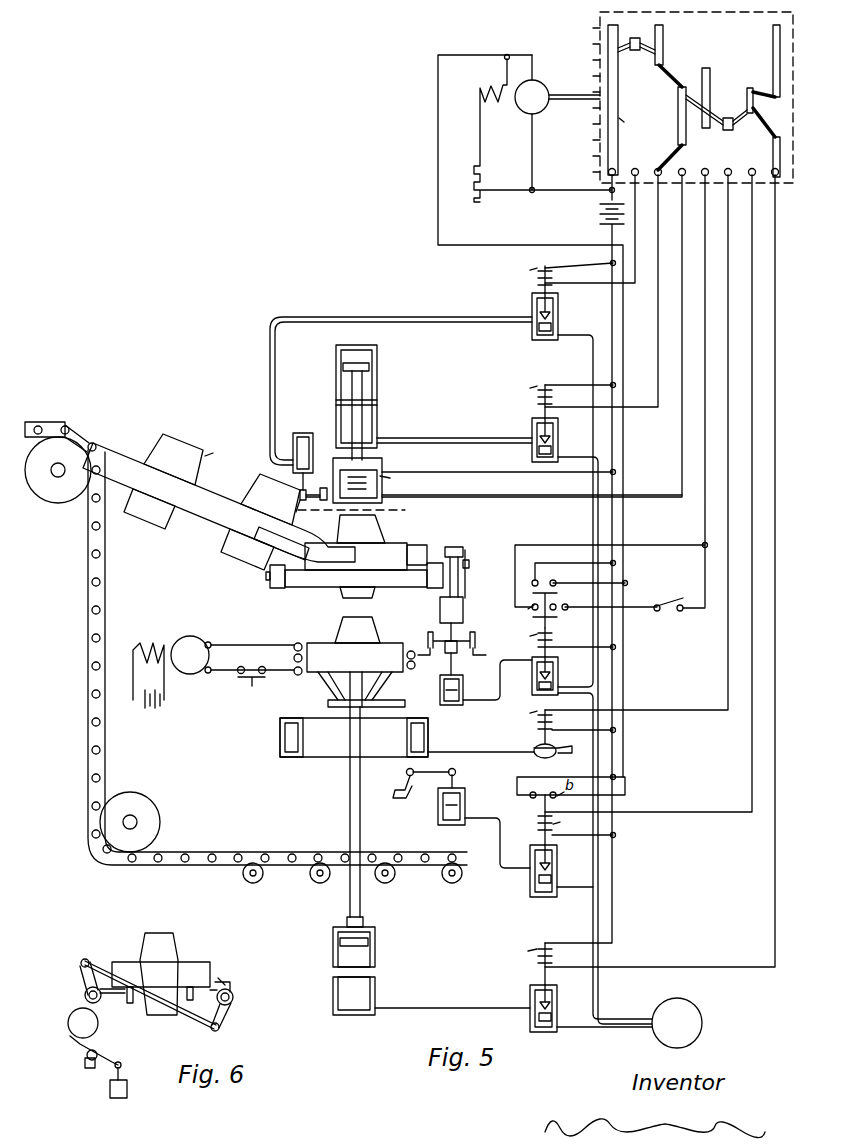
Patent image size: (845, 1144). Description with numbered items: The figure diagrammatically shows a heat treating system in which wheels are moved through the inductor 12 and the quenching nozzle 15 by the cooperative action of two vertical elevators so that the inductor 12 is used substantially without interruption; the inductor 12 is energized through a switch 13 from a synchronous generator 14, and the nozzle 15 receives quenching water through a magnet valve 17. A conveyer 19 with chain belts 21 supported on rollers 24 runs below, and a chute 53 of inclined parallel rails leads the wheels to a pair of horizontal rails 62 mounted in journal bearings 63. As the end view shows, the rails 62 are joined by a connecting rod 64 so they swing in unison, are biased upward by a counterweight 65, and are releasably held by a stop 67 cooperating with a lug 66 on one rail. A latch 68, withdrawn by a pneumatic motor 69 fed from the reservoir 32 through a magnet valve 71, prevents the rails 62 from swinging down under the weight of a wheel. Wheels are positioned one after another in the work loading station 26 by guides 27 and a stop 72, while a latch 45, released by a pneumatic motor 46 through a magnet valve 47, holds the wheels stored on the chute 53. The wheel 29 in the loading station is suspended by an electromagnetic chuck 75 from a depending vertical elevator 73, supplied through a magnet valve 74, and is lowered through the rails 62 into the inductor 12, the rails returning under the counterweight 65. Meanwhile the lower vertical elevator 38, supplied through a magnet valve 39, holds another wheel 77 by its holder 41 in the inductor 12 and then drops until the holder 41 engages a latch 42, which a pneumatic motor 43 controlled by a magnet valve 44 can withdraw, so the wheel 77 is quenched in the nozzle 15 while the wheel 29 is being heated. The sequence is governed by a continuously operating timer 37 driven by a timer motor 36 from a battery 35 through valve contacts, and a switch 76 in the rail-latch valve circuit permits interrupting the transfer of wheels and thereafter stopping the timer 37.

In FIG. 5, the inductor 12 is at (298, 675).
In FIG. 5, the switch 13 is at (248, 678).
In FIG. 5, the synchronous generator 14 is at (190, 674).
In FIG. 5, the quenching nozzle 15 is at (280, 738).
In FIG. 5, the magnet valve 17 is at (533, 748).
In FIG. 5, the conveyer 19 is at (192, 828).
In FIG. 5, the chain belts 21 is at (225, 866).
In FIG. 5, the rollers 24 is at (317, 880).
In FIG. 5, the work loading station 26 is at (405, 513).
In FIG. 5, the guides 27 is at (355, 554).
In FIG. 5, the wheel 29 is at (373, 537).
In FIG. 6, the wheel 29 is at (177, 950).
In FIG. 5, the reservoir 32 is at (696, 1018).
In FIG. 5, the battery 35 is at (599, 204).
In FIG. 5, the timer motor 36 is at (526, 112).
In FIG. 5, the timer 37 is at (790, 185).
In FIG. 5, the vertical elevator 38 is at (377, 950).
In FIG. 5, the magnet valve 39 is at (530, 998).
In FIG. 5, the holder 41 is at (378, 677).
In FIG. 5, the latch 42 is at (406, 795).
In FIG. 5, the pneumatic motor 43 is at (452, 826).
In FIG. 5, the magnet valve 44 is at (545, 897).
In FIG. 5, the latch 45 is at (305, 510).
In FIG. 5, the pneumatic motor 46 is at (303, 436).
In FIG. 5, the magnet valve 47 is at (532, 333).
In FIG. 5, the chute 53 is at (220, 524).
In FIG. 6, the chute 53 is at (131, 1004).
In FIG. 5, the horizontal rails 62 is at (332, 584).
In FIG. 6, the horizontal rails 62 is at (117, 994).
In FIG. 5, the journal bearings 63 is at (280, 588).
In FIG. 6, the journal bearings 63 is at (86, 990).
In FIG. 5, the connecting rod 64 is at (467, 556).
In FIG. 6, the connecting rod 64 is at (205, 1022).
In FIG. 5, the counterweight 65 is at (440, 607).
In FIG. 6, the counterweight 65 is at (68, 1020).
In FIG. 5, the lug 66 is at (452, 547).
In FIG. 6, the lug 66 is at (224, 980).
In FIG. 6, the stop 67 is at (234, 992).
In FIG. 5, the latch 68 is at (468, 636).
In FIG. 6, the latch 68 is at (72, 1052).
In FIG. 5, the pneumatic motor 69 is at (452, 706).
In FIG. 6, the pneumatic motor 69 is at (110, 1090).
In FIG. 5, the magnet valve 71 is at (559, 674).
In FIG. 5, the stop 72 is at (410, 545).
In FIG. 5, the depending vertical elevator 73 is at (378, 371).
In FIG. 5, the magnet valve 74 is at (532, 430).
In FIG. 5, the electromagnetic chuck 75 is at (383, 469).
In FIG. 5, the switch 76 is at (670, 611).
In FIG. 5, the wheel 77 is at (343, 622).